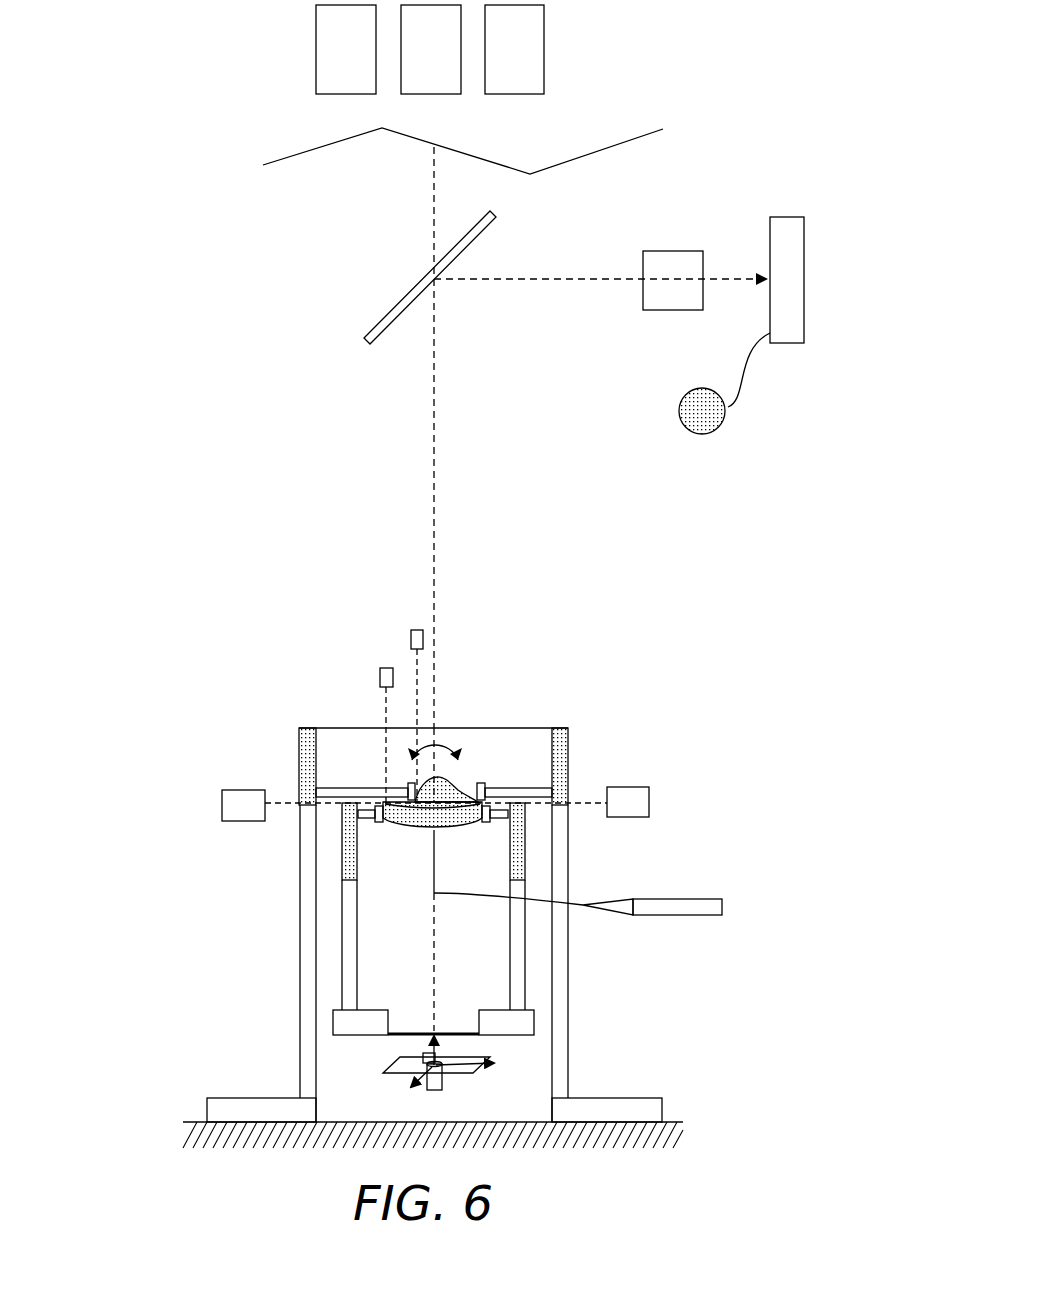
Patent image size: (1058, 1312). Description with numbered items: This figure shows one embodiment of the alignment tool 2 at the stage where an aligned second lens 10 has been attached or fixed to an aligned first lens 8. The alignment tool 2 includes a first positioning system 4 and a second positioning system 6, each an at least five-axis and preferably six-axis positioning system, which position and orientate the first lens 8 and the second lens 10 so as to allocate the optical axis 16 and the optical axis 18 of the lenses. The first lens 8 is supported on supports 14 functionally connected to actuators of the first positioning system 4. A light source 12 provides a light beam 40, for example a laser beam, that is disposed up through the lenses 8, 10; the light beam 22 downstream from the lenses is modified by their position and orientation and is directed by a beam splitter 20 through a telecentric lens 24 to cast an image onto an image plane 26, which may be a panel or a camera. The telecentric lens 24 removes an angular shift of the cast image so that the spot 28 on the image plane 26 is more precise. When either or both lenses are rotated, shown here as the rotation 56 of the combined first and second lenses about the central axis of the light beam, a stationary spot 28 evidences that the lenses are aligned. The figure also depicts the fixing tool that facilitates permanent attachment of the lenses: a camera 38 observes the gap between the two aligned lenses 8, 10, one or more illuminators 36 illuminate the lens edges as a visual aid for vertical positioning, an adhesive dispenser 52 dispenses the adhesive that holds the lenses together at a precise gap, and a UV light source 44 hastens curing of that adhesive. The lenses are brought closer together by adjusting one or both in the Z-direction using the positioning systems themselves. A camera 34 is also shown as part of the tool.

The alignment tool 2 is at (186, 810).
The first positioning system 4 is at (527, 815).
The second positioning system 6 is at (570, 758).
The first lens 8 is at (400, 830).
The second lens 10 is at (462, 787).
The light source 12 is at (442, 1084).
The supports 14 is at (352, 788).
The optical axis of lens 16 is at (462, 825).
The optical axis of lens 18 is at (436, 705).
The beam splitter 20 is at (385, 318).
The light beam downstream from lenses 22 is at (433, 425).
The telecentric lens 24 is at (652, 251).
The image plane 26 is at (795, 217).
The spot 28 is at (770, 279).
The camera 34 is at (362, 62).
The illuminator 36 is at (413, 632).
The camera 38 is at (240, 790).
The light beam 40 is at (430, 1012).
The UV light source 44 is at (628, 787).
The adhesive dispenser 52 is at (700, 900).
The rotation of combined first and second lenses about z-axis 56 is at (455, 758).